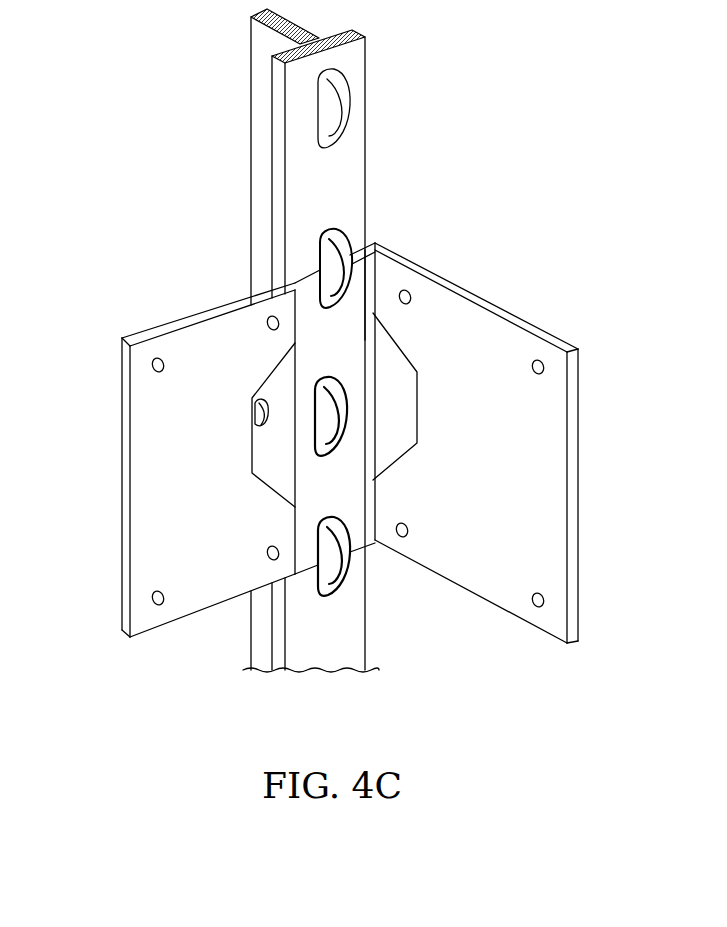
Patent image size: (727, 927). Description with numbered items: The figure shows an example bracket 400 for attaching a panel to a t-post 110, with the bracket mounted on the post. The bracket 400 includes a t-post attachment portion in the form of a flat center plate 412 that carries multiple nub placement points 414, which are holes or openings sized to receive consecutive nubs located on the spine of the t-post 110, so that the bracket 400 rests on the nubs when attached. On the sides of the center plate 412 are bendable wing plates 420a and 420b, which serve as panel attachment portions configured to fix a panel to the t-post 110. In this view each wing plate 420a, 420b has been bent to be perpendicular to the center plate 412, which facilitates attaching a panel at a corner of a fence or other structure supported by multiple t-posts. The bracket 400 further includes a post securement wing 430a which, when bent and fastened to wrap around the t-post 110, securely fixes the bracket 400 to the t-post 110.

The t-post 110 is at (367, 162).
The bracket 400 is at (494, 210).
The flat center plate 412 is at (368, 293).
The nub placement points 414 is at (300, 295).
The bendable wing plate 420a is at (145, 612).
The bendable wing plate 420b is at (502, 337).
The post securement wing 430a is at (268, 390).